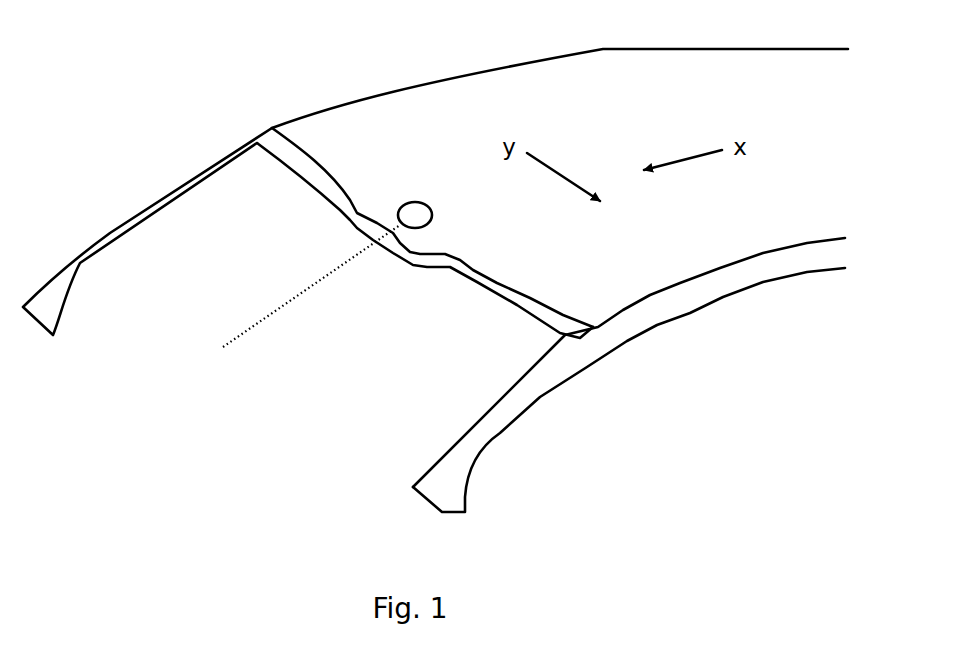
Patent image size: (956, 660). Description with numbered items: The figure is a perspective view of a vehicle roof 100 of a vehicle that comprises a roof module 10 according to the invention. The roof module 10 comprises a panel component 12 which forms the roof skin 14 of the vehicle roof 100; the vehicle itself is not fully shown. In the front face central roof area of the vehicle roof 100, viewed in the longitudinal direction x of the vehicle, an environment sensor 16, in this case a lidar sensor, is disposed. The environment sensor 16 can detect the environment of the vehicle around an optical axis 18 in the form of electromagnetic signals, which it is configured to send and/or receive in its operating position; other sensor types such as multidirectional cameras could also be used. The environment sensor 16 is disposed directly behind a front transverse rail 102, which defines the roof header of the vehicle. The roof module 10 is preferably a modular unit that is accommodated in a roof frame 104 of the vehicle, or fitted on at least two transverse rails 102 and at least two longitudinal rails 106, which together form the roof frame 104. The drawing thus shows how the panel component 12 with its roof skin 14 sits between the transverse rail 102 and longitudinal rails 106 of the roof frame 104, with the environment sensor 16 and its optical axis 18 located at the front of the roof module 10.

The vehicle roof 100 is at (234, 92).
The roof module 10 is at (363, 112).
The front transverse rail 102 is at (313, 173).
The roof frame 104 is at (683, 307).
The longitudinal rail 106 is at (803, 258).
The panel component 12 is at (507, 262).
The roof skin 14 is at (558, 278).
The environment sensor 16 is at (397, 217).
The optical axis 18 is at (335, 268).